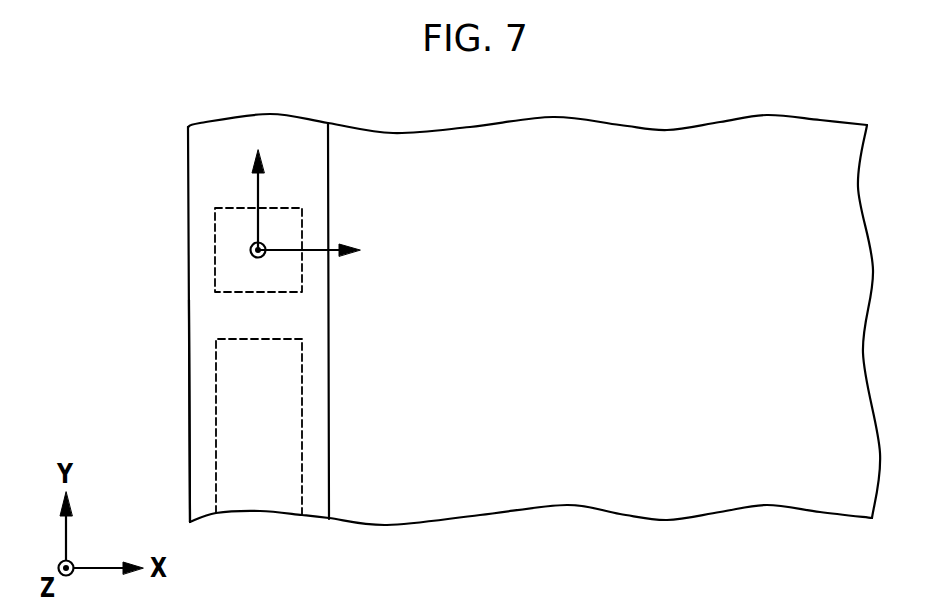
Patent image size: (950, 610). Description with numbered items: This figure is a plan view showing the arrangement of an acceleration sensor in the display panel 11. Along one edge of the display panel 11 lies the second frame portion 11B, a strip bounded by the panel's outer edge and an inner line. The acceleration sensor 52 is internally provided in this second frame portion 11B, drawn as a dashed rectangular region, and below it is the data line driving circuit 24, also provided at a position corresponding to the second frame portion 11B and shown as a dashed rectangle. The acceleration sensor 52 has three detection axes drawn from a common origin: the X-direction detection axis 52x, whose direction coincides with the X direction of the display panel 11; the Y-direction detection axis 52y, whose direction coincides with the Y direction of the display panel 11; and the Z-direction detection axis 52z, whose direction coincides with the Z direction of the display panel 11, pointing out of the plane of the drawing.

The display panel 11 is at (815, 128).
The second frame portion 11B is at (197, 412).
The data line driving circuit 24 is at (216, 368).
The acceleration sensor 52 is at (215, 228).
The X-direction detection axis 52x is at (312, 248).
The Y-direction detection axis 52y is at (256, 200).
The Z-direction detection axis 52z is at (254, 259).